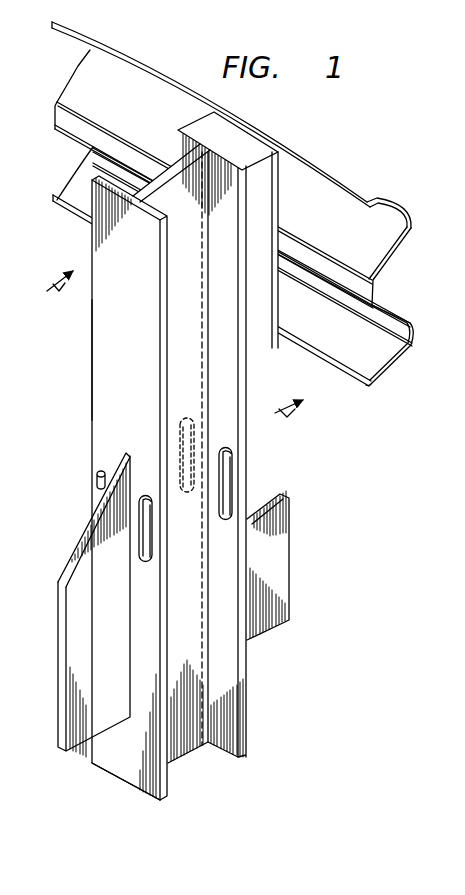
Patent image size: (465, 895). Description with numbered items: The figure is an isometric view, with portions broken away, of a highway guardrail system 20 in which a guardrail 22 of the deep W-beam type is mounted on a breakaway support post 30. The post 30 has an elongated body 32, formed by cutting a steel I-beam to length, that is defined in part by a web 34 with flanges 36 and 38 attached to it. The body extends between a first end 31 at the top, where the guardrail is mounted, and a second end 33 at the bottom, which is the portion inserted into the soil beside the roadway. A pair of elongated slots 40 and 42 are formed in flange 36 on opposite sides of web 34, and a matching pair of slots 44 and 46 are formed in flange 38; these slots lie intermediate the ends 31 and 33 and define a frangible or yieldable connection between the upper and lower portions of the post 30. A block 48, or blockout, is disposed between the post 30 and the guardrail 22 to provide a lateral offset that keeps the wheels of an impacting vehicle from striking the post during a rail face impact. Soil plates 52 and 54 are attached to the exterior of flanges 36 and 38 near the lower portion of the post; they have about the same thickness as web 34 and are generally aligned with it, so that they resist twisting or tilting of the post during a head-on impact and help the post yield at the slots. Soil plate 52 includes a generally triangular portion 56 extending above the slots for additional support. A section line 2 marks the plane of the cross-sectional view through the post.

The section line 2- 2 is at (165, 357).
The highway guardrail system 20 is at (316, 136).
The guardrail 22 is at (375, 175).
The breakaway support post 30 is at (262, 463).
The first end 31 is at (157, 163).
The elongated body 32 is at (78, 420).
The second end 33 is at (165, 803).
The web 34 is at (195, 647).
The flange 36 is at (92, 240).
The flange 38 is at (247, 366).
The elongated slot 40 is at (96, 478).
The elongated slot 42 is at (143, 495).
The slot 44 is at (186, 418).
The slot 46 is at (223, 447).
The block 48 is at (238, 140).
The soil plate 52 is at (58, 733).
The soil plate 54 is at (284, 566).
The generally triangular portion 56 is at (74, 556).